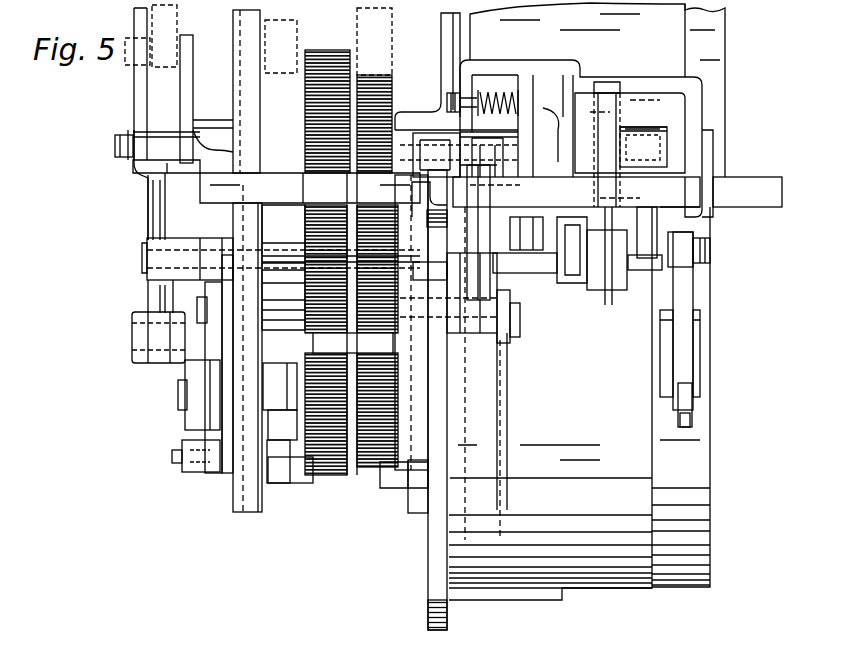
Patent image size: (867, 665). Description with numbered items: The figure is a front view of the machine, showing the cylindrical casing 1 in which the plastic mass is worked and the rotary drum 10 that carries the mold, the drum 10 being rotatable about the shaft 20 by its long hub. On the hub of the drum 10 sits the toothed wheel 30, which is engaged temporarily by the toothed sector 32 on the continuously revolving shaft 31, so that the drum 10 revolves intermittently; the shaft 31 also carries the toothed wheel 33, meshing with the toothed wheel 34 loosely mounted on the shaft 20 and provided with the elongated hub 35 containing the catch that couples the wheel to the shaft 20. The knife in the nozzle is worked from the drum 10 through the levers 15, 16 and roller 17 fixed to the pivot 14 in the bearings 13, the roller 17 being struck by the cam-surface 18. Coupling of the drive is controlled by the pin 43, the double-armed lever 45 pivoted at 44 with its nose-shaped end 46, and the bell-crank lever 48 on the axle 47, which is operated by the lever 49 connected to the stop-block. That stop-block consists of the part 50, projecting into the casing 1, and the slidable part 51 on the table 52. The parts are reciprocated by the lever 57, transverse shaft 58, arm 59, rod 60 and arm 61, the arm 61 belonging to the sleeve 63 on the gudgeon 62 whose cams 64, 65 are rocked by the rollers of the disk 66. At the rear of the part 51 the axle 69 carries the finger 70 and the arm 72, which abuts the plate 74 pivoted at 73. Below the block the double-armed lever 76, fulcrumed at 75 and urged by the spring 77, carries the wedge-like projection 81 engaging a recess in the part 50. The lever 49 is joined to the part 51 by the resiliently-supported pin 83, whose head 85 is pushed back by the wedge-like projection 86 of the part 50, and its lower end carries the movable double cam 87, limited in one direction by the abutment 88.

The casing 1 is at (705, 108).
The rotary drum 10 is at (660, 428).
The bearings 13 is at (650, 262).
The pivot 14 is at (700, 252).
The lever 15 is at (622, 222).
The lever 16 is at (686, 302).
The roller 17 is at (700, 426).
The cam-surface 18 is at (697, 360).
The shaft 20 is at (178, 395).
The toothed wheel 30 is at (370, 483).
The shaft 31 is at (204, 364).
The toothed sector 32 is at (283, 299).
The toothed wheel 33 is at (283, 281).
The toothed wheel 34 is at (330, 470).
The elongated hub 35 is at (280, 386).
The pin 43 is at (172, 457).
The pivot 44 is at (282, 433).
The double-armed lever 45 is at (263, 466).
The nose-shaped end 46 is at (411, 322).
The axle 47 is at (351, 262).
The bell-crank lever 48 is at (400, 333).
The lever 49 is at (455, 88).
The stop-block part 50 is at (630, 133).
The slidable part 51 is at (650, 78).
The table 52 is at (747, 192).
The lever 57 is at (610, 275).
The transverse shaft 58 is at (525, 263).
The arm 59 is at (150, 300).
The rod 60 is at (133, 337).
The arm 61 is at (152, 213).
The gudgeon 62 is at (113, 150).
The sleeve 63 is at (183, 138).
The cam 64 is at (140, 76).
The cam 65 is at (192, 62).
The disk 66 is at (172, 22).
The axle 69 is at (413, 146).
The finger 70 is at (625, 132).
The arm 72 is at (473, 232).
The pivot 73 is at (520, 322).
The plate 74 is at (507, 302).
The fulcrum 75 is at (262, 262).
The double-armed lever 76 is at (424, 267).
The spring 77 is at (280, 258).
The wedge-like projection 81 is at (576, 192).
The resiliently-supported pin 83 is at (447, 98).
The head 85 is at (519, 103).
The wedge-like projection 86 is at (560, 125).
The movable double cam 87 is at (431, 273).
The abutment 88 is at (410, 226).